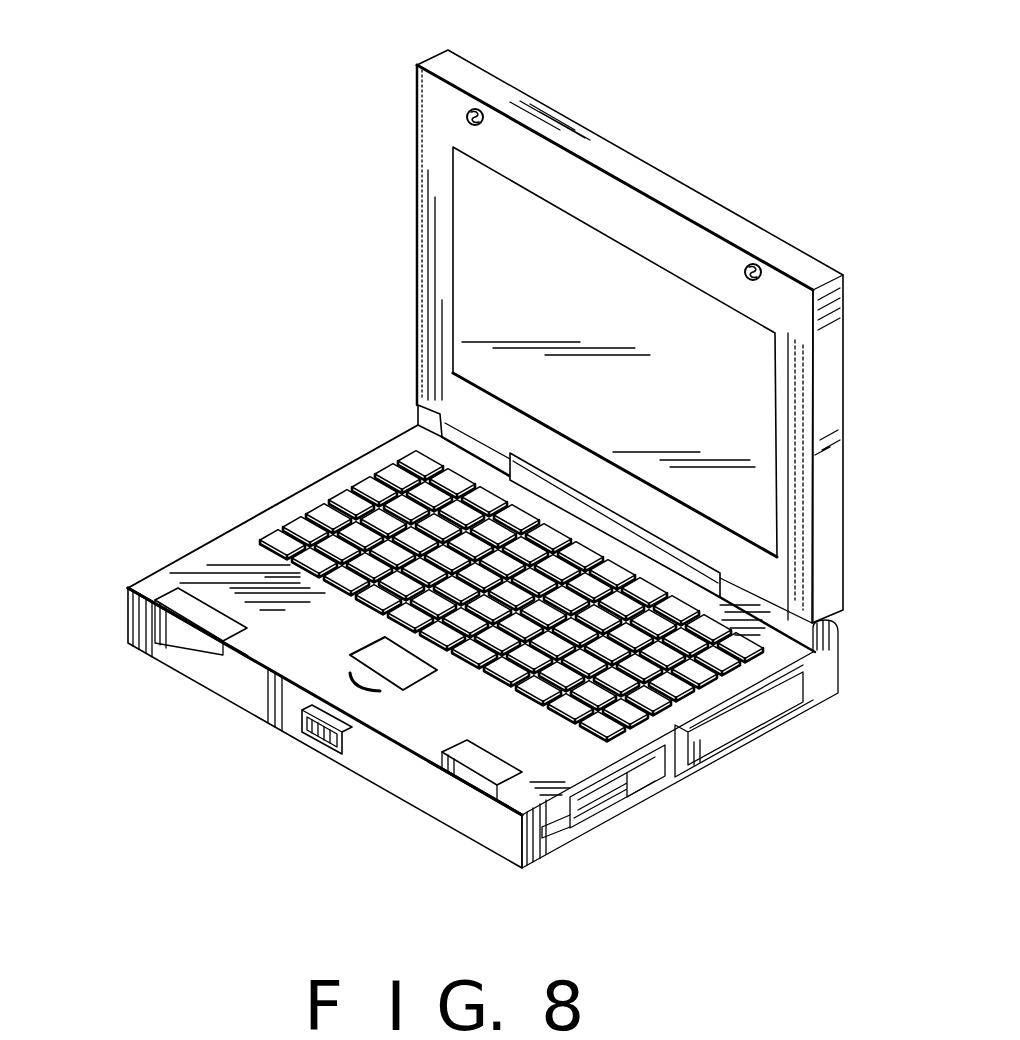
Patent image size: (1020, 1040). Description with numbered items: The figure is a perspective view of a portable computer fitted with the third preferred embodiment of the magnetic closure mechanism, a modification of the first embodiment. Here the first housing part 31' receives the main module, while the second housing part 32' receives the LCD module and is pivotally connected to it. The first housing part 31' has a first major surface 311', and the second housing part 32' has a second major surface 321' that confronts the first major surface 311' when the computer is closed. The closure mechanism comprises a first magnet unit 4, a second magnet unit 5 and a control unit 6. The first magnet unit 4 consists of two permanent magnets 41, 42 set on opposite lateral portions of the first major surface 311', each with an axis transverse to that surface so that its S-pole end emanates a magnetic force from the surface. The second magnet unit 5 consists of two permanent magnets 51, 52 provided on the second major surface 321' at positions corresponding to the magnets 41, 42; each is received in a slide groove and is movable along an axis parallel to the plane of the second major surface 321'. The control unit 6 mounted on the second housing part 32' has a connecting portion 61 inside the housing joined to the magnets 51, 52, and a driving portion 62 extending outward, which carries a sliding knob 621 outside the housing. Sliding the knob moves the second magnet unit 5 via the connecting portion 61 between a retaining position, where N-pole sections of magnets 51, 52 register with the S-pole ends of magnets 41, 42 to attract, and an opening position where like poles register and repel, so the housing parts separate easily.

The first magnet unit 4 is at (628, 314).
The permanent magnet 41 is at (475, 110).
The permanent magnet 42 is at (758, 266).
The first housing part 31' is at (663, 336).
The first major surface 311' is at (562, 352).
The second housing part 32' is at (448, 646).
The second major surface 321' is at (469, 596).
The second magnet unit 5 is at (325, 731).
The permanent magnet 51 is at (476, 807).
The permanent magnet 52 is at (185, 635).
The control unit 6 is at (328, 756).
The connecting portion 61 is at (382, 745).
The driving portion 62 is at (357, 732).
The sliding knob 621 is at (337, 720).